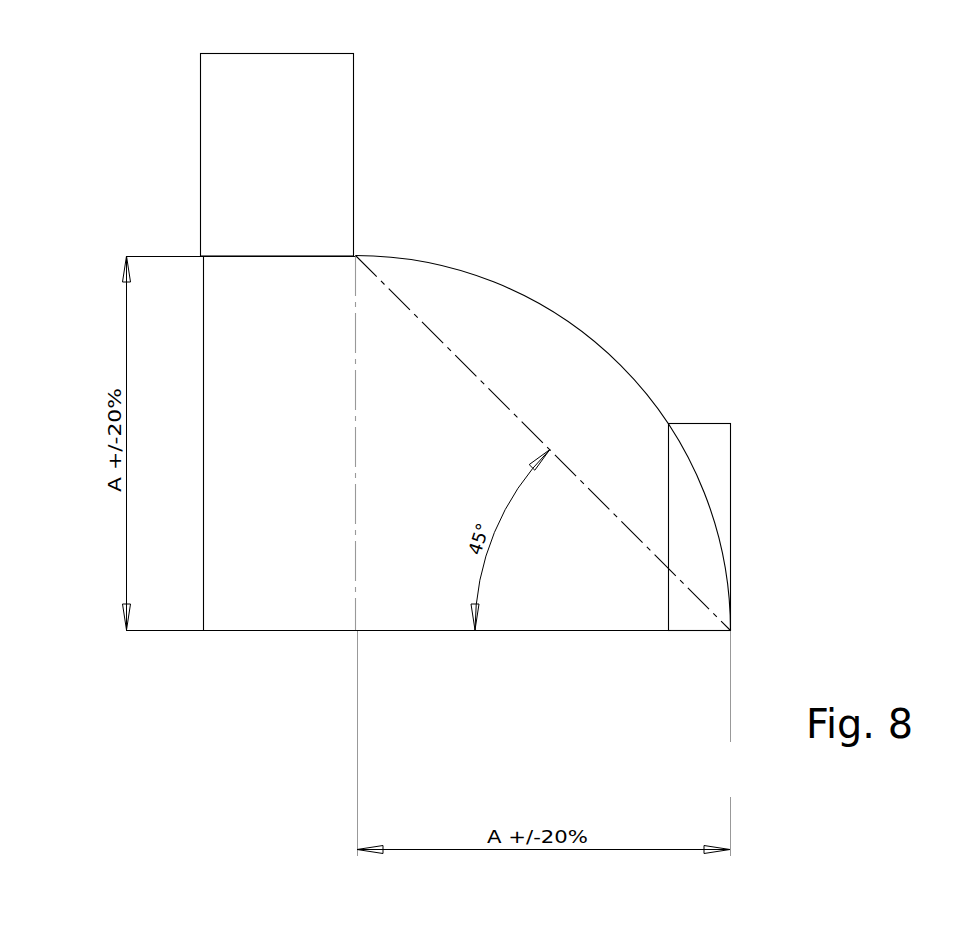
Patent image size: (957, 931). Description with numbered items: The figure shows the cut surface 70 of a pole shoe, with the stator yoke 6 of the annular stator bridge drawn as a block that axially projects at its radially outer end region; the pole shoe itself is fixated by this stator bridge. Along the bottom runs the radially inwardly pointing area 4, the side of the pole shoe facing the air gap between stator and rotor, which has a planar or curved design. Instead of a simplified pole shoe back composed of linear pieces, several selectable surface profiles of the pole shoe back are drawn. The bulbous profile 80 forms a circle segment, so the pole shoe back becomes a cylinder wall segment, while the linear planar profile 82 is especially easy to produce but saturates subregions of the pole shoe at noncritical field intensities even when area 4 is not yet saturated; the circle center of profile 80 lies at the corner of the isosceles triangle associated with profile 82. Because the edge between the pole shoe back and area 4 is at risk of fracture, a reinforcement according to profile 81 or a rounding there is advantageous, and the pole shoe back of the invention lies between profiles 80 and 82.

The radially inwardly pointing area 4 is at (262, 631).
The stator yoke 6 is at (270, 138).
The cut surface 70 is at (289, 408).
The bulbous profile 80 is at (470, 267).
The reinforcement profile 81 is at (702, 422).
The linear planar profile 82 is at (503, 400).